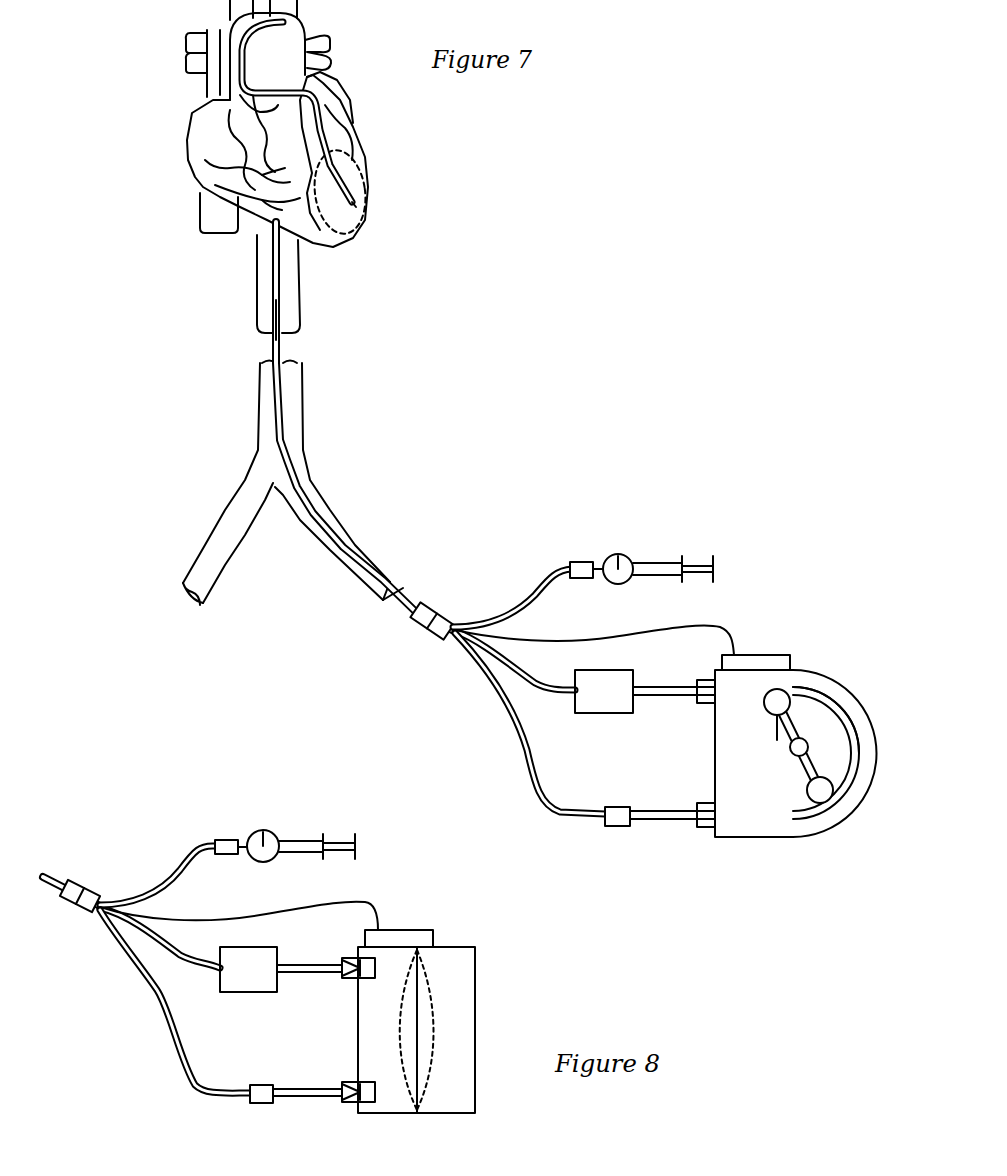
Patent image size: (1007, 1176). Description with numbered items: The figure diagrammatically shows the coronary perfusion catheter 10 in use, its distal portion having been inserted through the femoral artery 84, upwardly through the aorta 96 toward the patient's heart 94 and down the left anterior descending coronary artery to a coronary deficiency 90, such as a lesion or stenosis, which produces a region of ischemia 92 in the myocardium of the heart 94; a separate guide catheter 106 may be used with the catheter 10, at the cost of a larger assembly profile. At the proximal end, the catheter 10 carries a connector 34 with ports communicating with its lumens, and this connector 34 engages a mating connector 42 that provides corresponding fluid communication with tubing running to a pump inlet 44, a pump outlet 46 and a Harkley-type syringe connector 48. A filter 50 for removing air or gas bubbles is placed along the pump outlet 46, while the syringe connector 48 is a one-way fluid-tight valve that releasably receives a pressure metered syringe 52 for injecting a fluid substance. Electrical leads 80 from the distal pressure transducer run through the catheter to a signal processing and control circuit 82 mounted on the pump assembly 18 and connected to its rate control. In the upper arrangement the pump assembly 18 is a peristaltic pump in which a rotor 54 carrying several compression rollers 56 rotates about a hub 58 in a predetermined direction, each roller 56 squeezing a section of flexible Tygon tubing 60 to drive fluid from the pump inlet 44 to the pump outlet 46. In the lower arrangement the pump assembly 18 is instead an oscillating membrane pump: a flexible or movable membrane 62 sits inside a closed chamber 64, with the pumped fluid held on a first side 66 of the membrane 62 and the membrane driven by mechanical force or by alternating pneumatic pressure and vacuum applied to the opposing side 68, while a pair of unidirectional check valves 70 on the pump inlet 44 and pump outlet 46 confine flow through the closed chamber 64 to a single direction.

In FIG. 7, the catheter 10 is at (173, 76).
In FIG. 7, the pump assembly 18 is at (789, 751).
In FIG. 8, the pump assembly 18 is at (450, 993).
In FIG. 7, the connector 34 is at (428, 608).
In FIG. 8, the connector 34 is at (68, 889).
In FIG. 7, the mating connector 42 is at (452, 617).
In FIG. 8, the mating connector 42 is at (98, 905).
In FIG. 7, the pump inlet 44 is at (698, 827).
In FIG. 8, the pump inlet 44 is at (345, 1097).
In FIG. 7, the pump outlet 46 is at (698, 703).
In FIG. 8, the pump outlet 46 is at (345, 980).
In FIG. 7, the syringe connector 48 is at (580, 562).
In FIG. 8, the syringe connector 48 is at (227, 840).
In FIG. 7, the filter 50 is at (602, 705).
In FIG. 8, the filter 50 is at (255, 992).
In FIG. 7, the pressure metered syringe 52 is at (655, 565).
In FIG. 8, the pressure metered syringe 52 is at (300, 842).
In FIG. 7, the rotor 54 is at (808, 760).
In FIG. 7, the compression rollers 56 is at (783, 697).
In FIG. 7, the hub 58 is at (790, 753).
In FIG. 7, the tubing 60 is at (838, 712).
In FIG. 8, the membrane 62 is at (417, 983).
In FIG. 8, the closed chamber 64 is at (465, 1040).
In FIG. 8, the first side 66 is at (392, 1007).
In FIG. 8, the opposing side 68 is at (463, 1098).
In FIG. 8, the unidirectional check valves 70 is at (348, 960).
In FIG. 7, the electrical leads 80 is at (647, 630).
In FIG. 8, the electrical leads 80 is at (273, 913).
In FIG. 7, the signal processing and control circuit 82 is at (762, 655).
In FIG. 8, the signal processing and control circuit 82 is at (408, 930).
In FIG. 7, the femoral artery 84 is at (322, 523).
In FIG. 7, the coronary deficiency 90 is at (360, 170).
In FIG. 7, the region of ischemia 92 is at (360, 207).
In FIG. 7, the heart 94 is at (249, 123).
In FIG. 7, the aorta 96 is at (260, 285).
In FIG. 7, the guide catheter 106 is at (402, 598).